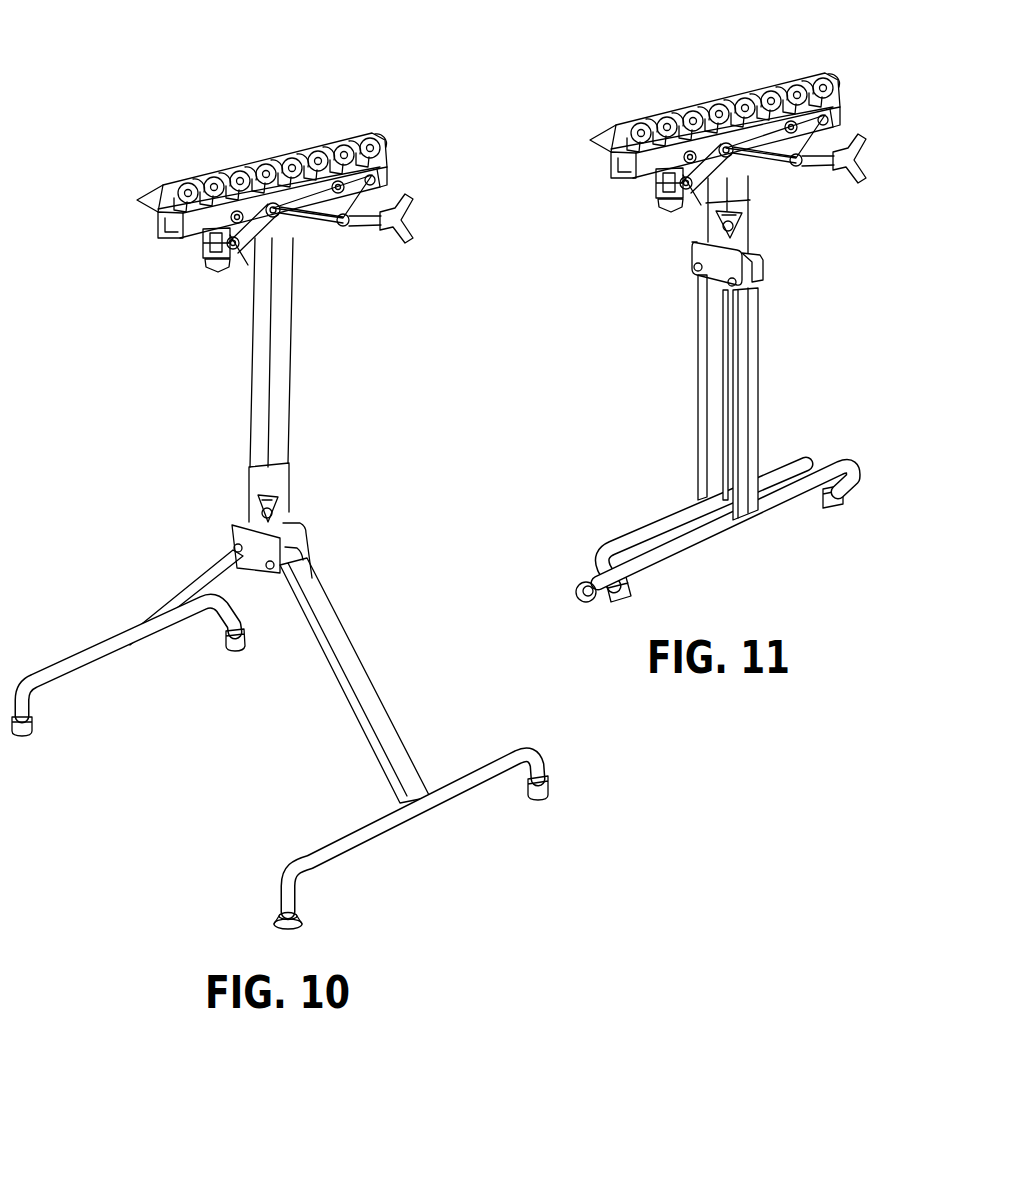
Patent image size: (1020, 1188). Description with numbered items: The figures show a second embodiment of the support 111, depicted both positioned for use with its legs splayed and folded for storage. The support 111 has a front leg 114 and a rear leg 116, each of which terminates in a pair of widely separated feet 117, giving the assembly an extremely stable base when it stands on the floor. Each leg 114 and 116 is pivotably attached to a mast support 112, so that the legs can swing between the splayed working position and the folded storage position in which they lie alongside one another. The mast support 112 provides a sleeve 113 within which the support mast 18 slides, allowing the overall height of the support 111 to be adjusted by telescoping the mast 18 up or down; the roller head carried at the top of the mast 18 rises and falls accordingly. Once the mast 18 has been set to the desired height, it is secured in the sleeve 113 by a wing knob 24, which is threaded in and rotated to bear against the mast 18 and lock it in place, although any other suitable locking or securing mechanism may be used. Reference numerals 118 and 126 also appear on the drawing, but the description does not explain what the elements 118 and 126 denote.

In FIG. 10, the support mast 18 is at (288, 370).
In FIG. 10, the wing knob 24 is at (260, 513).
In FIG. 10, the support 111 is at (177, 279).
In FIG. 11, the support 111 is at (642, 218).
In FIG. 10, the mast support 112 is at (286, 484).
In FIG. 11, the mast support 112 is at (752, 204).
In FIG. 10, the sleeve 113 is at (253, 482).
In FIG. 11, the sleeve 113 is at (752, 247).
In FIG. 10, the front leg 114 is at (167, 604).
In FIG. 10, the rear leg 116 is at (345, 667).
In FIG. 10, the feet 117 is at (32, 712).
In FIG. 11, the feet 117 is at (588, 583).
In FIG. 11, the leg brace 118 is at (716, 394).
In FIG. 10, the locking bolt 126 is at (272, 502).